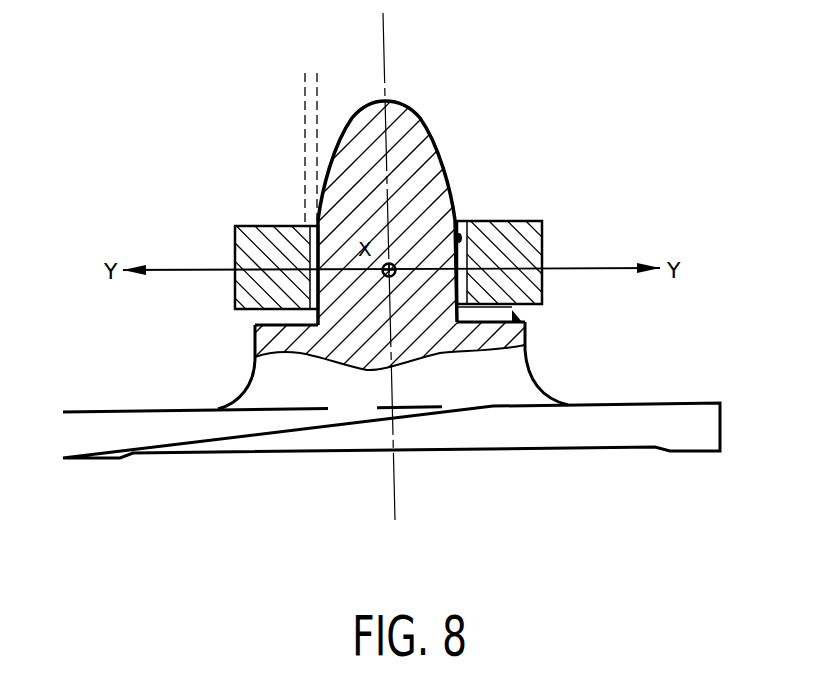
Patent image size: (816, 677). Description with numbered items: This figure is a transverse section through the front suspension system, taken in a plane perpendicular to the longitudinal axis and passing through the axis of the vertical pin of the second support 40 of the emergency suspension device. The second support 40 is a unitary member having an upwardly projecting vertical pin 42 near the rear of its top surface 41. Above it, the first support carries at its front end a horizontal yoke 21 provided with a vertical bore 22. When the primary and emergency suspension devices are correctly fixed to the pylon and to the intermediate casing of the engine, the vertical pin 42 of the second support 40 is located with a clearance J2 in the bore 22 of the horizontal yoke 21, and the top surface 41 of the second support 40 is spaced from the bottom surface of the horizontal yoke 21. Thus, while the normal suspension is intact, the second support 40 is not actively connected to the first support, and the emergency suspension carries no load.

The horizontal yoke 21 is at (518, 240).
The vertical bore 22 is at (451, 221).
The second support 40 is at (462, 433).
The top surface 41 is at (516, 313).
The vertical pin 42 is at (410, 120).
The clearance J2 is at (337, 83).